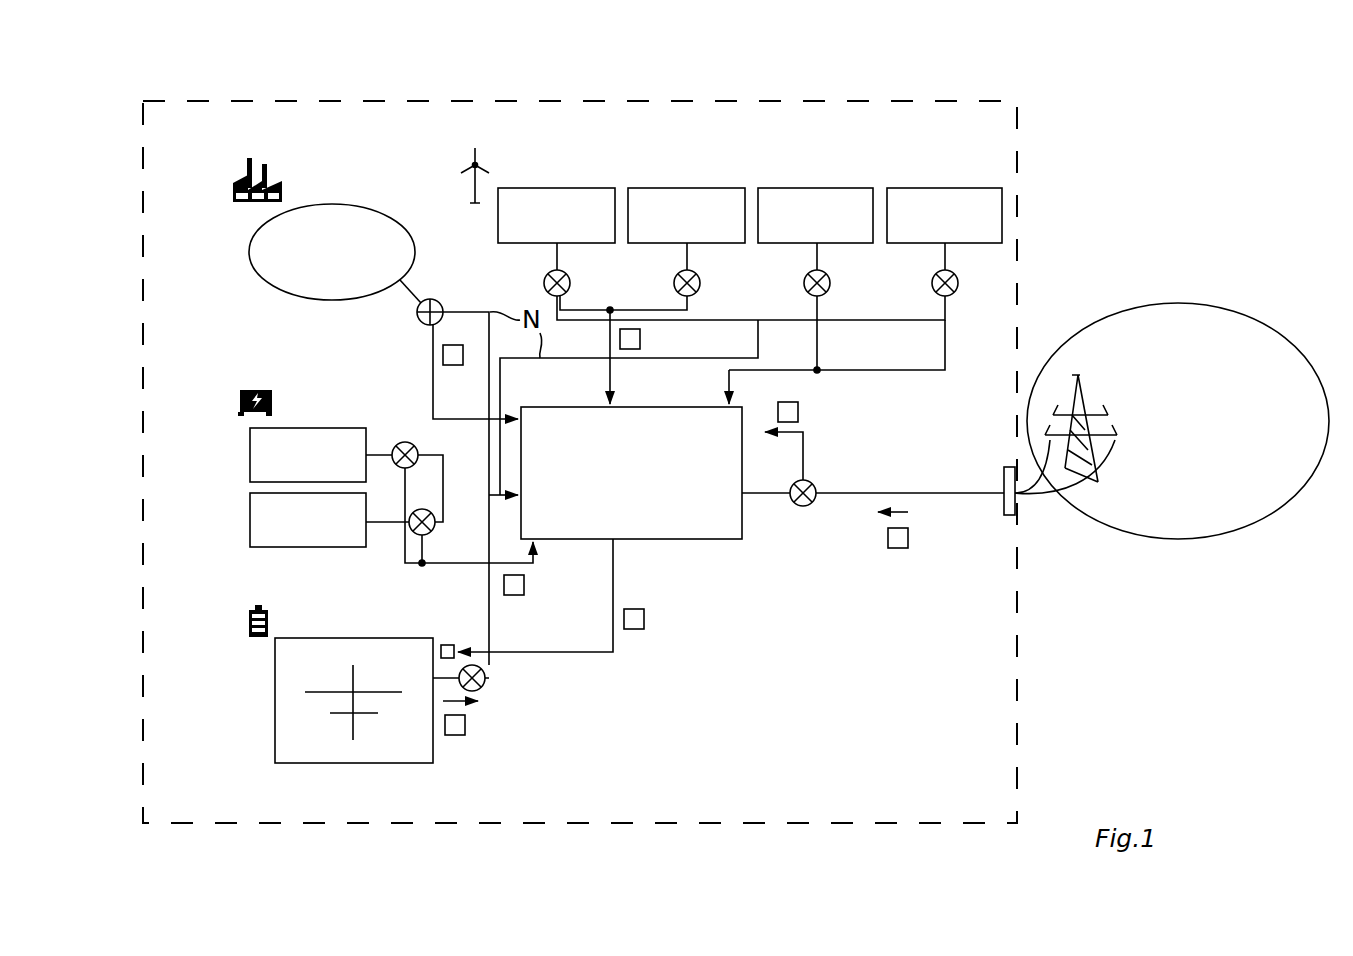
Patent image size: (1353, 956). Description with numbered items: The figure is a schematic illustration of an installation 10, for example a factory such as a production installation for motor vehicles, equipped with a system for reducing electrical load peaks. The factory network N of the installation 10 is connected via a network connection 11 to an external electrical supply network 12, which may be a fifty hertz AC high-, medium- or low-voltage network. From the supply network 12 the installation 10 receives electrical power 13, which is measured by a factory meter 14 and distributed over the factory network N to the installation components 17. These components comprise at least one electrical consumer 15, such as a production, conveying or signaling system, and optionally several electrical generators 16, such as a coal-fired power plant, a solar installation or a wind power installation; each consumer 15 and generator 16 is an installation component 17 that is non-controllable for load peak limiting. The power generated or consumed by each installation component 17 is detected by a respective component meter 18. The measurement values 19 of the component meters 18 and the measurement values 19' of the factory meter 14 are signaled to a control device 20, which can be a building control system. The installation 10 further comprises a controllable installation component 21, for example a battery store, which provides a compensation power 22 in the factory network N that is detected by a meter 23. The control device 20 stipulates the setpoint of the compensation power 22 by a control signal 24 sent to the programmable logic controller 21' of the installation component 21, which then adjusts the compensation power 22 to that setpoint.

The installation 10 is at (970, 100).
The network connection 11 is at (1005, 467).
The electrical supply network 12 is at (1180, 540).
The electrical power 13 is at (895, 548).
The factory meter 14 is at (813, 484).
The electrical consumer 15 is at (250, 250).
The electrical generator 16 is at (557, 188).
The installation component 17 is at (210, 525).
The component meter 18 is at (674, 283).
The measurement values 19 is at (581, 467).
The measurement values 19' is at (825, 438).
The control device 20 is at (722, 540).
The installation component 21 is at (320, 700).
The programmable logic controller 21' is at (433, 617).
The compensation power 22 is at (465, 727).
The meter 23 is at (486, 685).
The control signal 24 is at (645, 620).